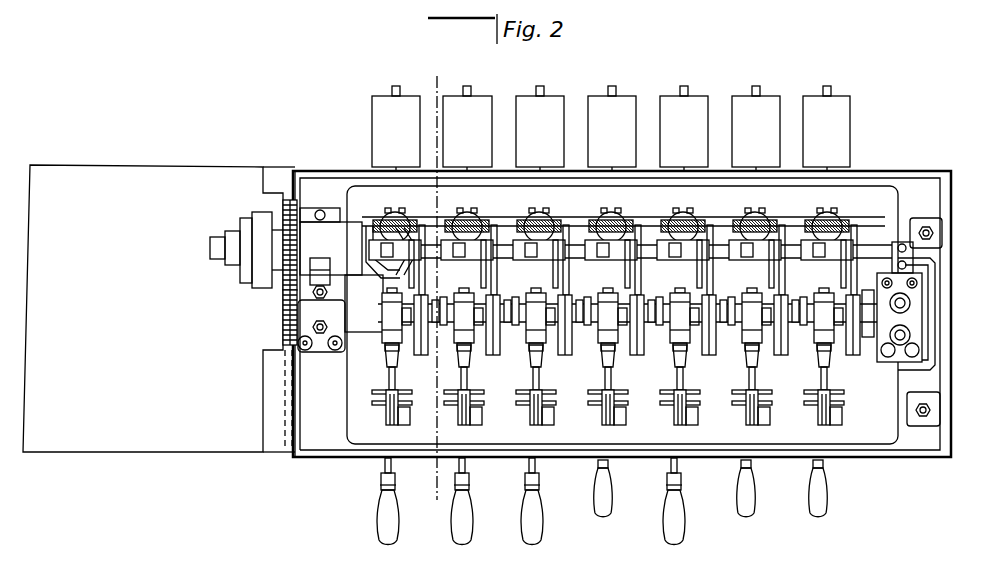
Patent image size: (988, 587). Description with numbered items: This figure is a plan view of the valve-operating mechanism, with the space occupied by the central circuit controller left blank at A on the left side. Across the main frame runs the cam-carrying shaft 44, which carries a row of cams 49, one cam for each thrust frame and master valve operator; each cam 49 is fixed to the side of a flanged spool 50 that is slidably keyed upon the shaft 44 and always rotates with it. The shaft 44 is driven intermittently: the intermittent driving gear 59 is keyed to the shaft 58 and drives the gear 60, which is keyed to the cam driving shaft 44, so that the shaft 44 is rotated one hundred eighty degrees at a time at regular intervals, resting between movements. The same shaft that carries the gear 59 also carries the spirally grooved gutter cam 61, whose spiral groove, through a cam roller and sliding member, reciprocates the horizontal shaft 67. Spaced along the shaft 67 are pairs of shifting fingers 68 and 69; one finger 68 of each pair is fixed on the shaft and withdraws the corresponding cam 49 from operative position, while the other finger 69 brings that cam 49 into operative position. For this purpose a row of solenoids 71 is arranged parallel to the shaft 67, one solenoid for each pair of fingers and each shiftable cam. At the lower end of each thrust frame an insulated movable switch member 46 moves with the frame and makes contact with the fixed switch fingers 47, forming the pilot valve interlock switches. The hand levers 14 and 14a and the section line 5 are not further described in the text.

The section line 5 is at (434, 280).
The valve operating handle 14 is at (462, 527).
The short valve operating handle 14a is at (612, 495).
The cam-carrying shaft 44 is at (942, 292).
The insulated movable switch member 46 is at (388, 364).
The fixed switch fingers 47 is at (378, 386).
The cam 49 is at (420, 349).
The flanged spool 50 is at (463, 300).
The shaft 58 is at (210, 249).
The intermittent driving gear 59 is at (285, 203).
The gear 60 is at (283, 318).
The spirally grooved gutter cam 61 is at (385, 228).
The reciprocating shaft 67 is at (876, 258).
The shifting finger 68 is at (500, 271).
The shifting finger 69 is at (408, 230).
The solenoid 71 is at (462, 213).
The blank space A is at (159, 308).